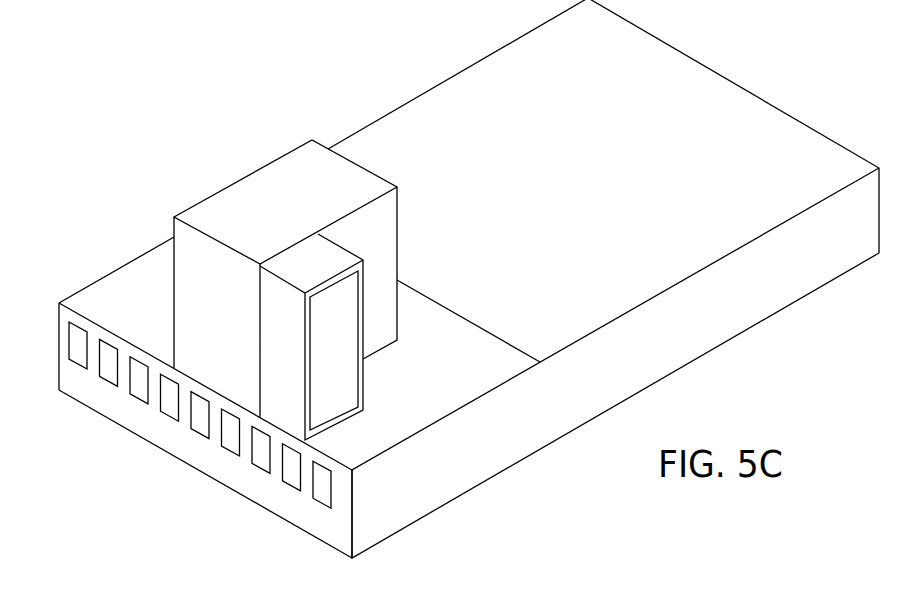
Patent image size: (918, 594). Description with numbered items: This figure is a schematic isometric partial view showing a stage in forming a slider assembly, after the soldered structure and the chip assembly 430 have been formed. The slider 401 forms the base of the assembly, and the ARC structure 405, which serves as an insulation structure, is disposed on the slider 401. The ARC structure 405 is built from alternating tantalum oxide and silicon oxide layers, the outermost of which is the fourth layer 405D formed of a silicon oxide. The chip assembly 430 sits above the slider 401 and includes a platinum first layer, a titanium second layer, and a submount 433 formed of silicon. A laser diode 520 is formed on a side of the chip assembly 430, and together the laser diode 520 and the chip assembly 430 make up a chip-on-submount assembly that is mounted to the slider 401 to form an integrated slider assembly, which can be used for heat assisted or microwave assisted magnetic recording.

The slider 401 is at (475, 103).
The ARC structure 405 is at (468, 360).
The fourth layer 405D is at (130, 310).
The chip assembly 430 is at (285, 245).
The submount 433 is at (322, 178).
The laser diode 520 is at (327, 393).